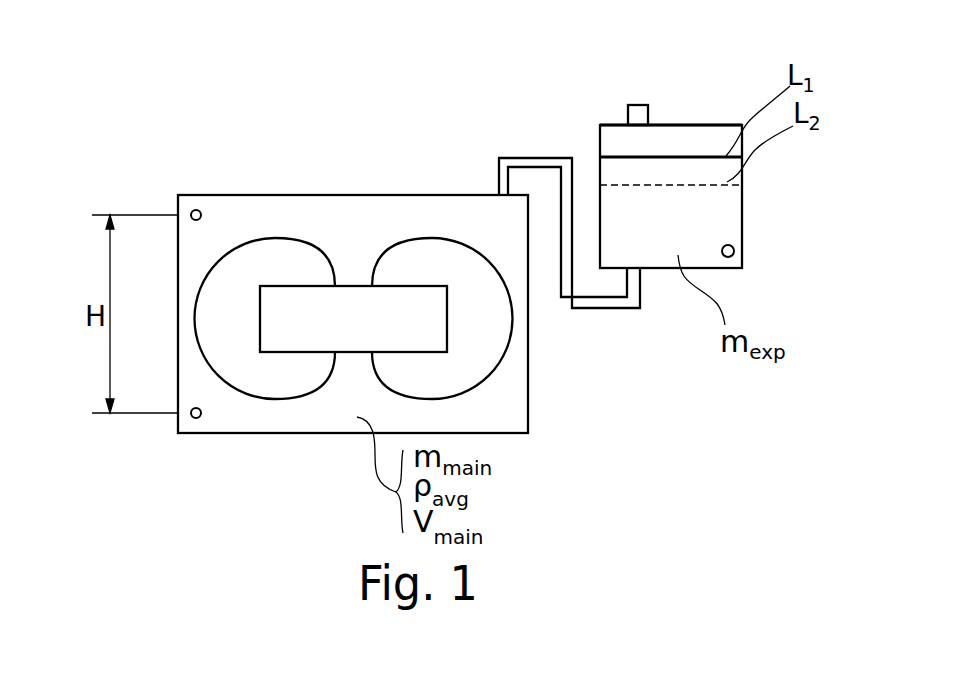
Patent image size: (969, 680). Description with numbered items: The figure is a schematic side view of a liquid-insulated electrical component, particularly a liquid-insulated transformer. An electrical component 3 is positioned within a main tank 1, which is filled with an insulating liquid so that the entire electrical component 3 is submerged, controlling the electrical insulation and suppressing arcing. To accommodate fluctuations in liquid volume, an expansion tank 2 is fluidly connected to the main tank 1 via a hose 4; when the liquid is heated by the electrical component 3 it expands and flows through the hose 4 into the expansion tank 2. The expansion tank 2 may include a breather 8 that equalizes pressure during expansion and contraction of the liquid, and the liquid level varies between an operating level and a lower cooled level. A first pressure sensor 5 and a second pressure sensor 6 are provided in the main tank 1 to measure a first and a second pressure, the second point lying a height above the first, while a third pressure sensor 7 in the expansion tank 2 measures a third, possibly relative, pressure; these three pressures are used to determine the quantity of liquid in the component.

The main tank 1 is at (158, 113).
The expansion tank 2 is at (739, 78).
The electrical component 3 is at (490, 359).
The hose 4 is at (540, 158).
The first pressure sensor 5 is at (203, 415).
The second pressure sensor 6 is at (202, 212).
The third pressure sensor 7 is at (742, 251).
The breather 8 is at (638, 105).